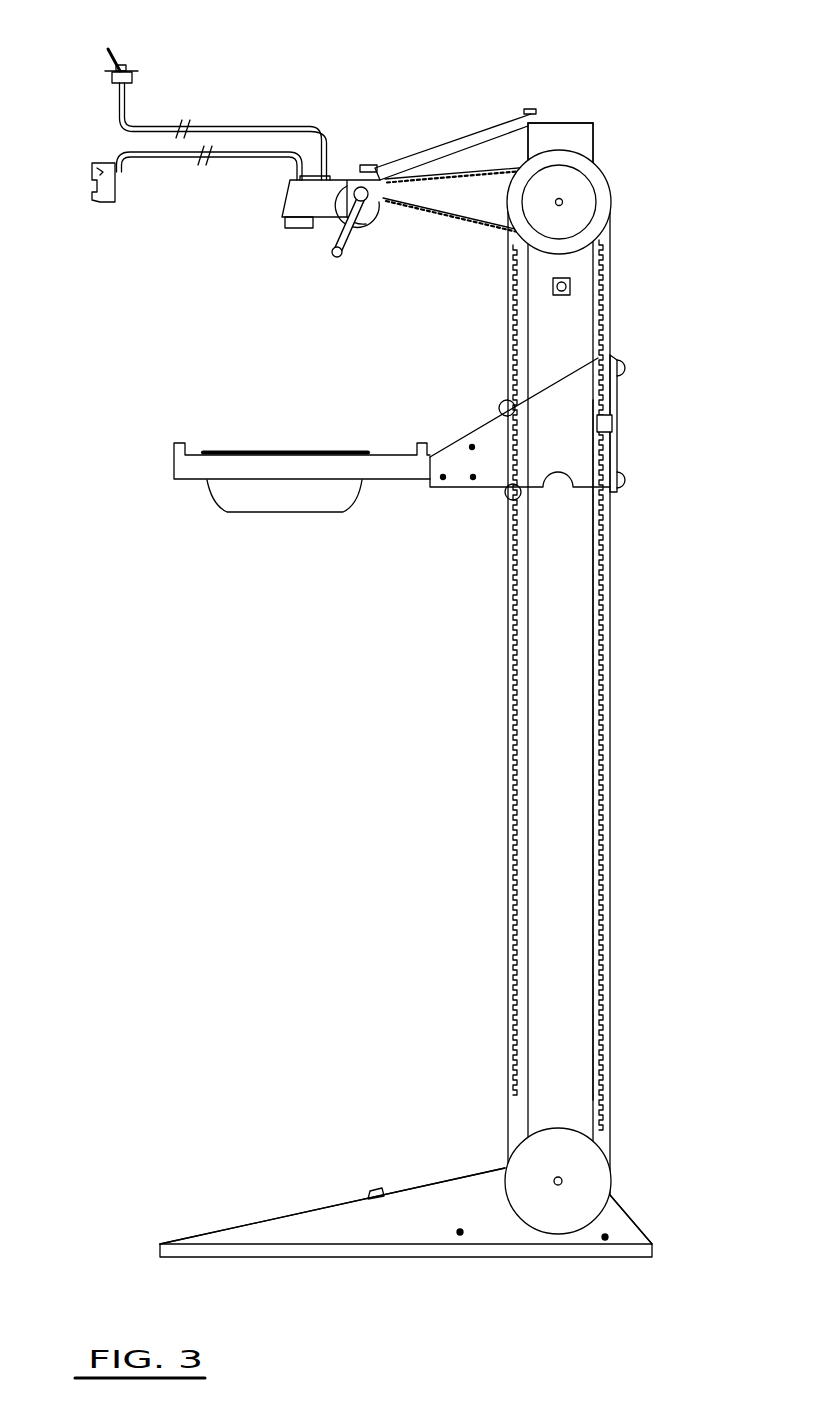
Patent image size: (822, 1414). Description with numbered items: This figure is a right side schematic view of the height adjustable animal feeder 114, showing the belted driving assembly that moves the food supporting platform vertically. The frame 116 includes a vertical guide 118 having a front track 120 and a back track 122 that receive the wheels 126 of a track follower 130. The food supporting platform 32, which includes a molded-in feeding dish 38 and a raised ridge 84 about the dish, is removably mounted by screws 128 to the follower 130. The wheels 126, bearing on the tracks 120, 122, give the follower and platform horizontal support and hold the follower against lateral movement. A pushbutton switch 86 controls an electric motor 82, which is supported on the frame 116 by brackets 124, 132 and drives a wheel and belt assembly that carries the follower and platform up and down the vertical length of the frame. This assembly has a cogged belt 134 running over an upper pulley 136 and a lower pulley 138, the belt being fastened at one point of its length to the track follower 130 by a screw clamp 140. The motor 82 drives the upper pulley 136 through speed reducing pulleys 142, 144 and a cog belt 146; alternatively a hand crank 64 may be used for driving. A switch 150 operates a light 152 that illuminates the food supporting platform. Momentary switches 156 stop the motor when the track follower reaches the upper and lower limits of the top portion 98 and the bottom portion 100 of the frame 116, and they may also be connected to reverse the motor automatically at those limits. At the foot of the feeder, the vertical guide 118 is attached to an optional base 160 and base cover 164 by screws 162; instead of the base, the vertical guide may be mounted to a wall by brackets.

The food supporting platform 32 is at (173, 462).
The molded-in feeding dish 38 is at (225, 500).
The hand crank 64 is at (350, 254).
The electric motor 82 is at (334, 180).
The raised ridge 84 is at (176, 443).
The pushbutton switch 86 is at (92, 170).
The top portion 98 is at (620, 263).
The bottom portion 100 is at (624, 1102).
The height adjustable animal feeder 114 is at (618, 126).
The frame 116 is at (566, 126).
The vertical guide 118 is at (583, 890).
The front track 120 is at (527, 682).
The back track 122 is at (592, 770).
The bracket 124 is at (484, 131).
The wheels 126 is at (497, 405).
The screws 128 is at (443, 478).
The track follower 130 is at (480, 428).
The bracket 132 is at (287, 192).
The cogged belt 134 is at (605, 592).
The upper pulley 136 is at (608, 203).
The lower pulley 138 is at (595, 1188).
The screw clamp 140 is at (612, 423).
The speed reducing pulley 142 is at (343, 203).
The speed reducing pulley 144 is at (580, 193).
The cog belt 146 is at (487, 228).
The switch 150 is at (110, 72).
The light 152 is at (285, 228).
The momentary switches 156 is at (571, 287).
The base 160 is at (655, 1252).
The screws 162 is at (460, 1232).
The base cover 164 is at (213, 1235).